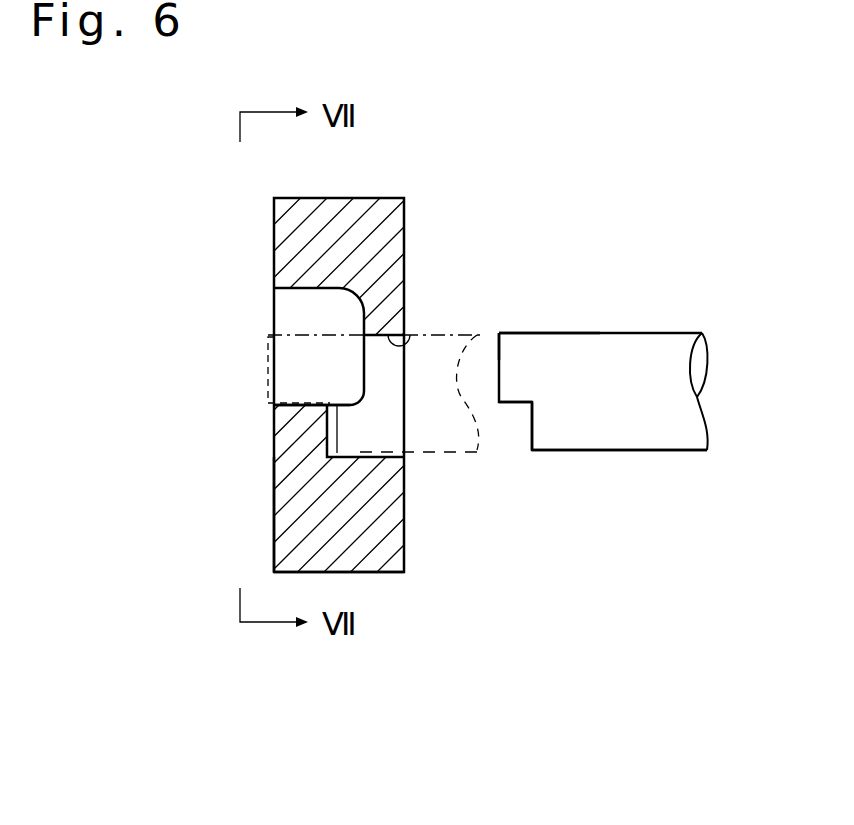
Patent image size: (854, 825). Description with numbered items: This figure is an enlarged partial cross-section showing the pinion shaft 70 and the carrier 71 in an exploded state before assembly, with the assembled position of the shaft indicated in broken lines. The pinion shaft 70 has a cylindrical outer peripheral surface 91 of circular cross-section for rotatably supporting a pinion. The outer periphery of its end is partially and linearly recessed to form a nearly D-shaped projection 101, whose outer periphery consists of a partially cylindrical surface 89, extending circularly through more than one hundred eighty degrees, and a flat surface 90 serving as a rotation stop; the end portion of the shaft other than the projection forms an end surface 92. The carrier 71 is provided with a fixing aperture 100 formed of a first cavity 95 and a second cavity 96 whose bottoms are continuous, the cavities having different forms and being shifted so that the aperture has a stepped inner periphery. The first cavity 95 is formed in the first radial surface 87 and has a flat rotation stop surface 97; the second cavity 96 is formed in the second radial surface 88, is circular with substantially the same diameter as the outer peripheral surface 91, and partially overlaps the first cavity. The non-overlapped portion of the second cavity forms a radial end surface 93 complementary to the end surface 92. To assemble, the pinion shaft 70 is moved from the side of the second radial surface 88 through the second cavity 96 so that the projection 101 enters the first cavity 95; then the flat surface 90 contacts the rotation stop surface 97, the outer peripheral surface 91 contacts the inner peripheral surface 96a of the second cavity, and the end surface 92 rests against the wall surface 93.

The pinion shaft 70 is at (600, 328).
The carrier 71 is at (408, 238).
The first radial surface 87 is at (275, 508).
The second radial surface 88 is at (405, 550).
The partially cylindrical surface 89 is at (540, 353).
The flat surface 90 is at (517, 410).
The outer peripheral surface 91 is at (642, 418).
The end surface 92 is at (529, 425).
The radial end surface 93 is at (330, 432).
The first cavity 95 is at (300, 306).
The second cavity 96 is at (372, 435).
The inner peripheral surface 96a is at (406, 339).
The rotation stop surface 97 is at (290, 405).
The fixing aperture 100 is at (240, 338).
The projection 101 is at (511, 320).